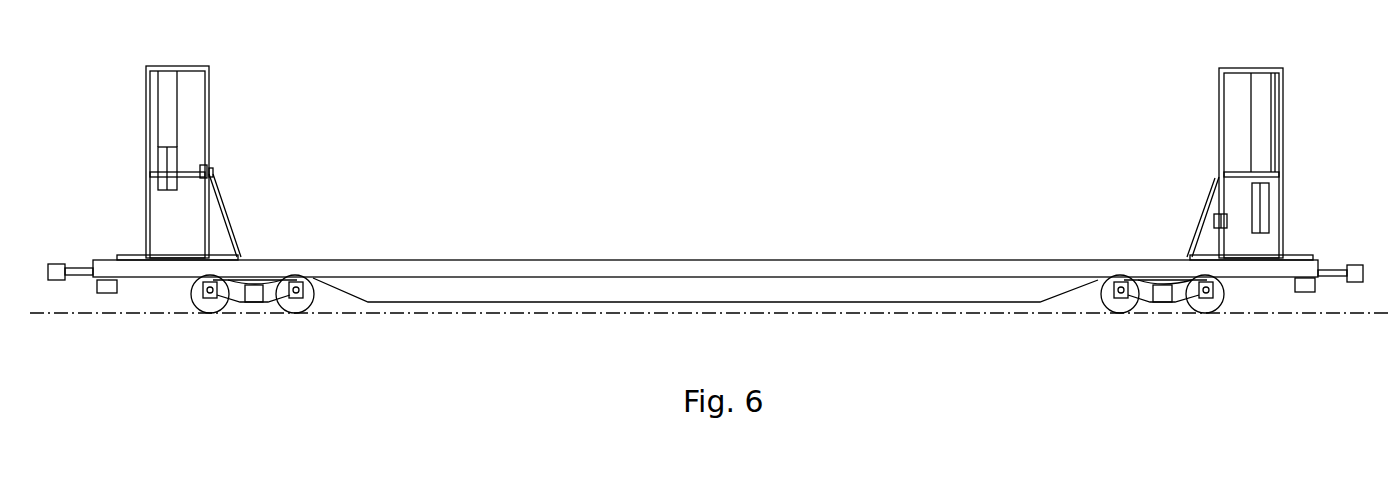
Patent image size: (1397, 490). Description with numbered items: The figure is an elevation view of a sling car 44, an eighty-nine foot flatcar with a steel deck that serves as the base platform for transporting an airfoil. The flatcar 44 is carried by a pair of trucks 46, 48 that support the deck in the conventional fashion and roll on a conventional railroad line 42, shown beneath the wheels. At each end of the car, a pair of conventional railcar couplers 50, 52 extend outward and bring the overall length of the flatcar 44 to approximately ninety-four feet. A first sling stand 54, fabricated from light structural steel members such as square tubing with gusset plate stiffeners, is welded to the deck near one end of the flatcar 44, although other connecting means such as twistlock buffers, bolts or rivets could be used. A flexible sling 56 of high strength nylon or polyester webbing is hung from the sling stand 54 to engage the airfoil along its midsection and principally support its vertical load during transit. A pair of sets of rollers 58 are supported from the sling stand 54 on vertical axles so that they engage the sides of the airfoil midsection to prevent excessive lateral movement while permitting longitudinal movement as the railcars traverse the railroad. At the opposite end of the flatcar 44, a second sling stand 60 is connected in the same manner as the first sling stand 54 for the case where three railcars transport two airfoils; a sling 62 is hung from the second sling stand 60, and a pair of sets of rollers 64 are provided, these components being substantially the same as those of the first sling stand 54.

The railroad line 42 is at (492, 313).
The sling car 44 is at (732, 260).
The truck 46 is at (250, 303).
The truck 48 is at (1162, 303).
The railcar coupler 50 is at (53, 280).
The railcar coupler 52 is at (1352, 265).
The first sling stand 54 is at (182, 151).
The flexible sling 56 is at (158, 166).
The rollers 58 is at (213, 170).
The second sling stand 60 is at (1238, 151).
The sling 62 is at (1272, 207).
The rollers 64 is at (1215, 222).